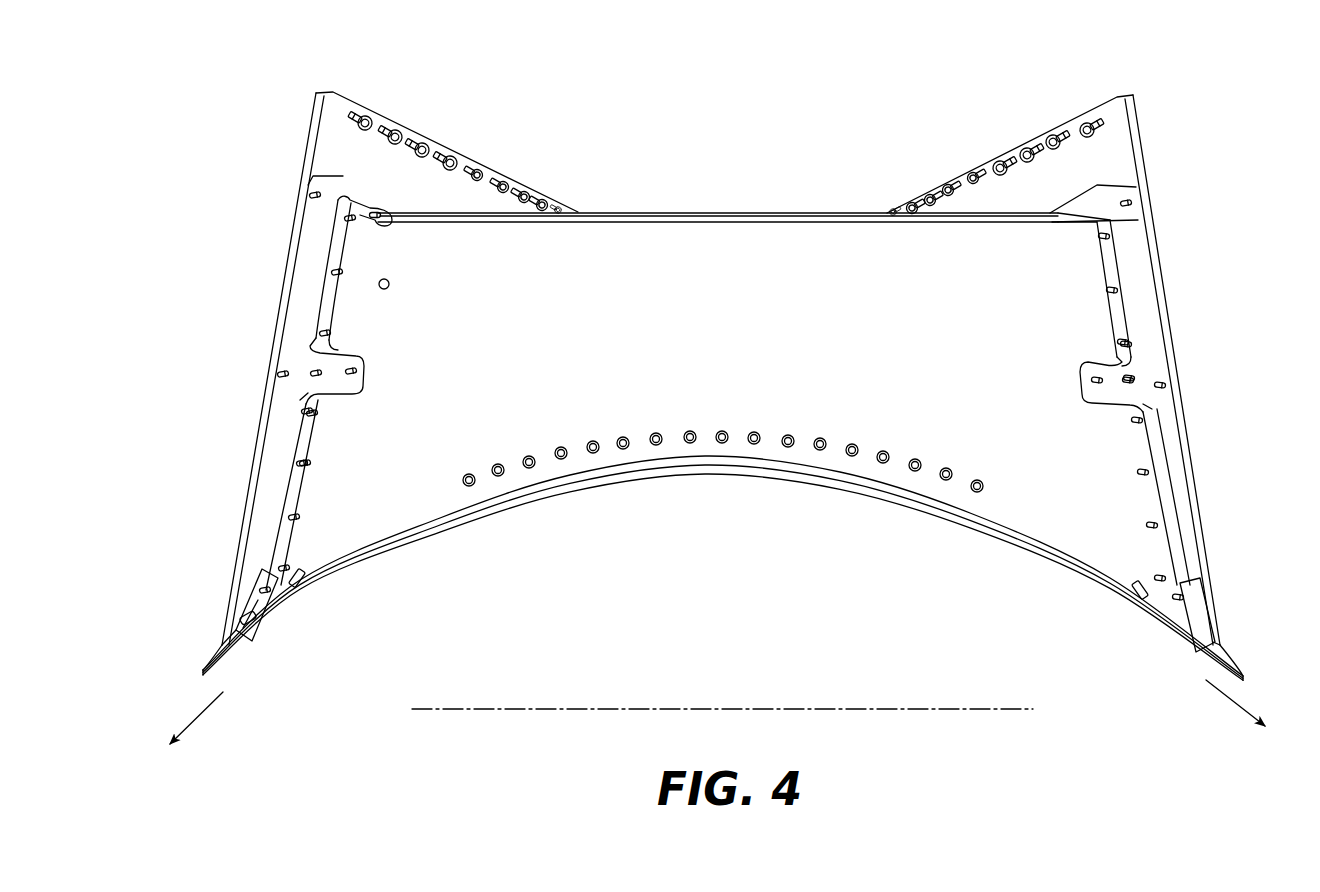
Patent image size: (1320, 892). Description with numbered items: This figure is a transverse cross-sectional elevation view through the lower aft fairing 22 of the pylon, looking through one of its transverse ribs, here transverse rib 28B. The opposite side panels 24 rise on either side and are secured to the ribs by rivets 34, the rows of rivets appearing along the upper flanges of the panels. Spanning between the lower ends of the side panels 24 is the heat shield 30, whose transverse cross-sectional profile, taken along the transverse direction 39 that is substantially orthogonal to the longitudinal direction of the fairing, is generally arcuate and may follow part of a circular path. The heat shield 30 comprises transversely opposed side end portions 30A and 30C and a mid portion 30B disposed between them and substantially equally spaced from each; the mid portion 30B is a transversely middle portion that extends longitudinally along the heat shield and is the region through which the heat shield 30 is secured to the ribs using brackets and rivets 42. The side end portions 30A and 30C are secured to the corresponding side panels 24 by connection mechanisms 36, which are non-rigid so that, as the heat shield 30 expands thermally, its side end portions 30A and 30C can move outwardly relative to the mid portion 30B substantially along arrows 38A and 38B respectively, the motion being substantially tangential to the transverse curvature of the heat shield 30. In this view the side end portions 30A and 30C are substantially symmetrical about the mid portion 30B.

The lower aft fairing 22 is at (741, 128).
The side panels 24 is at (313, 121).
The transverse rib 28B is at (722, 350).
The heat shield 30 is at (430, 525).
The side end portion 30A is at (256, 642).
The mid portion 30B is at (686, 498).
The side end portion 30C is at (1169, 680).
The rivets 34 is at (303, 410).
The connection mechanisms 36 is at (210, 578).
The arrow 38A is at (205, 710).
The arrow 38B is at (1232, 705).
The transverse direction 39 is at (585, 710).
The rivets 42 is at (822, 452).